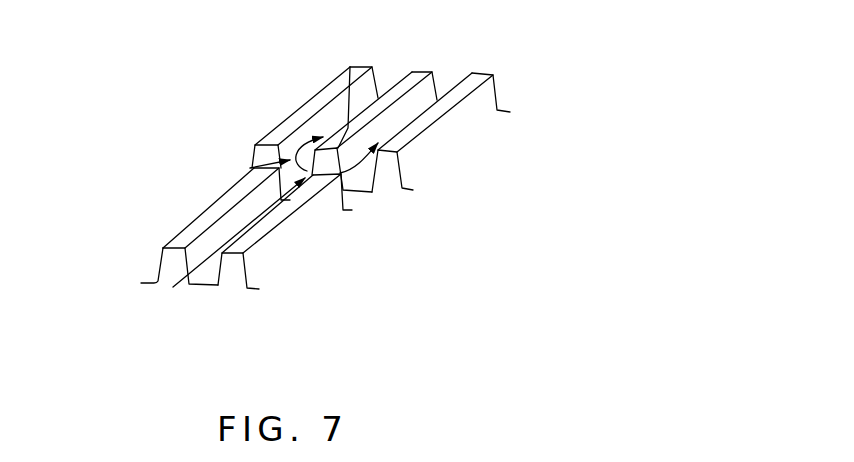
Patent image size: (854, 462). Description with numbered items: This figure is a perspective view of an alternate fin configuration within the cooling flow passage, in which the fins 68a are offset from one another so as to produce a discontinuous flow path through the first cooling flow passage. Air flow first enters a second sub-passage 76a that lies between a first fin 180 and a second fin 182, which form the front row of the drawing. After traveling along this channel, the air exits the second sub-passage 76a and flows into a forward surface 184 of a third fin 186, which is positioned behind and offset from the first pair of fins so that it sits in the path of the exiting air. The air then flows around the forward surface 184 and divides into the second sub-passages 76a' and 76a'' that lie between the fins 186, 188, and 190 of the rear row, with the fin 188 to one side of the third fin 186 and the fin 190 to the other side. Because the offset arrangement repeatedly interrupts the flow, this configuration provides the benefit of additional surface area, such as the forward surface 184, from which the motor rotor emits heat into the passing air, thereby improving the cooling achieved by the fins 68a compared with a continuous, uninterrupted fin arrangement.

The fins 68a is at (180, 198).
The second sub-passage 76a is at (239, 278).
The second sub-passage 76a' is at (229, 148).
The second sub-passage 76a'' is at (397, 201).
The first fin 180 is at (167, 243).
The second fin 182 is at (265, 238).
The forward surface 184 is at (350, 67).
The third fin 186 is at (417, 76).
The fin 188 is at (297, 115).
The fin 190 is at (420, 130).